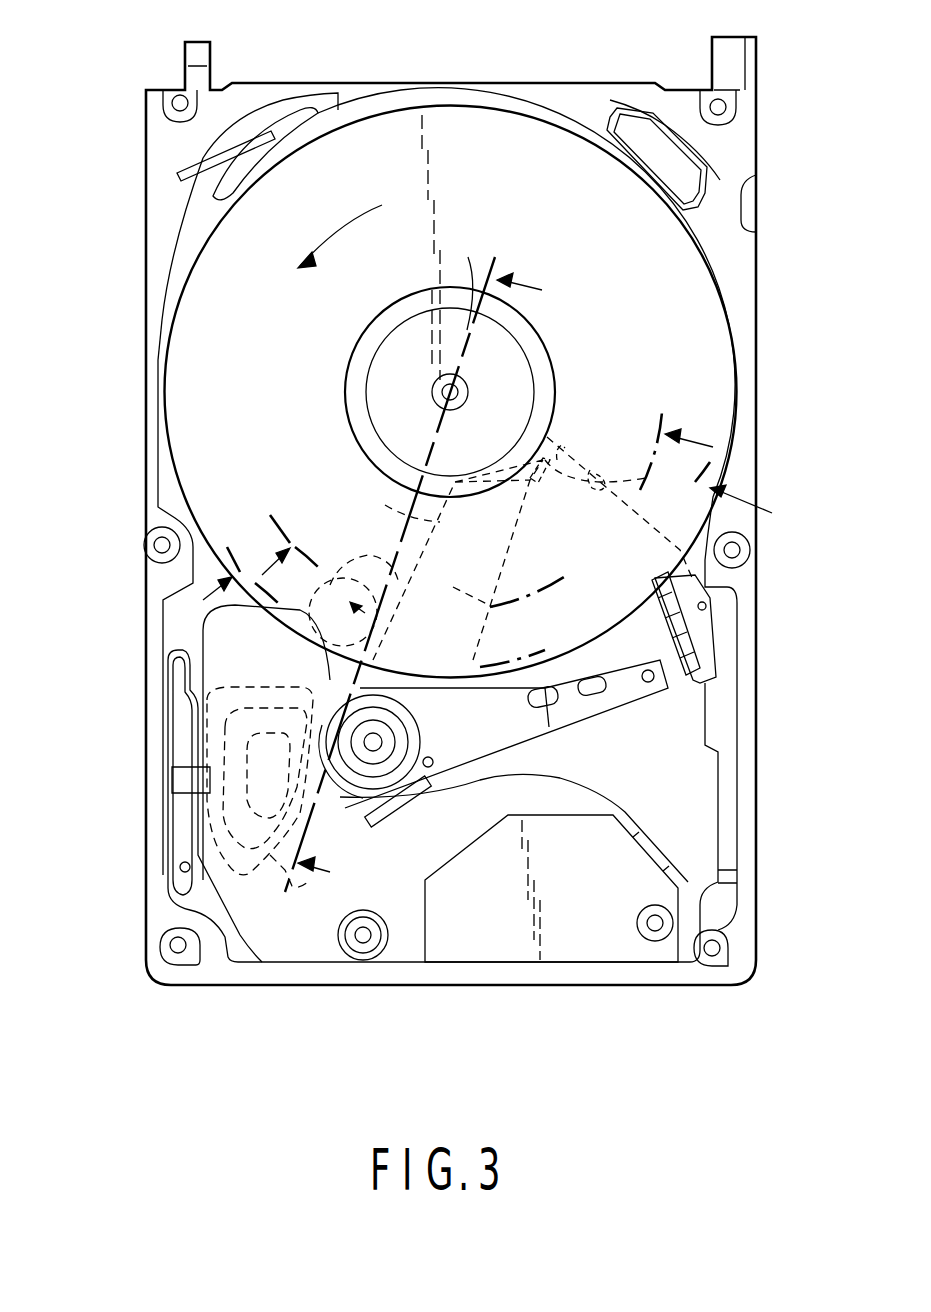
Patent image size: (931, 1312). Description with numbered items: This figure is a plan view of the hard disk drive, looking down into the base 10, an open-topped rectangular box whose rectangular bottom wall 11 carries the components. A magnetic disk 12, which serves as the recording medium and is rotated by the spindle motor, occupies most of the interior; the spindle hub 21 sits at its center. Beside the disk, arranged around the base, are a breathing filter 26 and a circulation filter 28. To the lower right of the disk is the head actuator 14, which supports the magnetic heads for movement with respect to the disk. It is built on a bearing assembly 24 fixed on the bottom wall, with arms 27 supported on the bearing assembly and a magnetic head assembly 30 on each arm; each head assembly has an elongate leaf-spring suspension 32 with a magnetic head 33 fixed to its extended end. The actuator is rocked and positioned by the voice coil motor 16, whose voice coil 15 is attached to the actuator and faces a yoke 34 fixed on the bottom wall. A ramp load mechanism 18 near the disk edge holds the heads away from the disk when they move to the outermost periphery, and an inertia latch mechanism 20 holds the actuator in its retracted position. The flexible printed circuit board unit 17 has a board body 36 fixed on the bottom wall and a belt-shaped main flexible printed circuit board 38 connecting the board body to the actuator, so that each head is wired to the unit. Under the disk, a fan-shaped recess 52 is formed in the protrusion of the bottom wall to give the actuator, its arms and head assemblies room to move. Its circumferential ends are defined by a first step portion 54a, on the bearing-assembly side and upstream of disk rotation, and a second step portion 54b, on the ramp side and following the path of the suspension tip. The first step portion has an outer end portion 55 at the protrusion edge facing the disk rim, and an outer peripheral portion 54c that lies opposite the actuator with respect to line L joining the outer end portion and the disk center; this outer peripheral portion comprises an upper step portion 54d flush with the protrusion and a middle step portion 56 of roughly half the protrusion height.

The base 10 is at (146, 267).
The bottom wall 11 is at (690, 762).
The magnetic disk 12 is at (200, 358).
The head actuator 14 is at (610, 656).
The voice coil 15 is at (172, 784).
The voice coil motor 16 is at (307, 937).
The flexible printed circuit board unit 17 is at (512, 945).
The ramp load mechanism 18 is at (724, 622).
The inertia latch mechanism 20 is at (166, 704).
The spindle motor hub 21 is at (542, 343).
The bearing assembly 24 is at (382, 765).
The breathing filter 26 is at (686, 182).
The arm 27 is at (520, 727).
The circulation filter 28 is at (186, 175).
The magnetic head assembly 30 is at (627, 697).
The suspension 32 is at (600, 703).
The magnetic head 33 is at (658, 681).
The yoke 34 is at (265, 943).
The board body 36 is at (602, 943).
The main flexible printed circuit board 38 is at (547, 773).
The recess 52 is at (568, 480).
The first step portion 54a is at (402, 512).
The second step portion 54b is at (608, 480).
The outer peripheral portion 54c is at (380, 648).
The upper step portion 54d is at (330, 580).
The outer end portion 55 is at (328, 670).
The middle step portion 56 is at (333, 611).